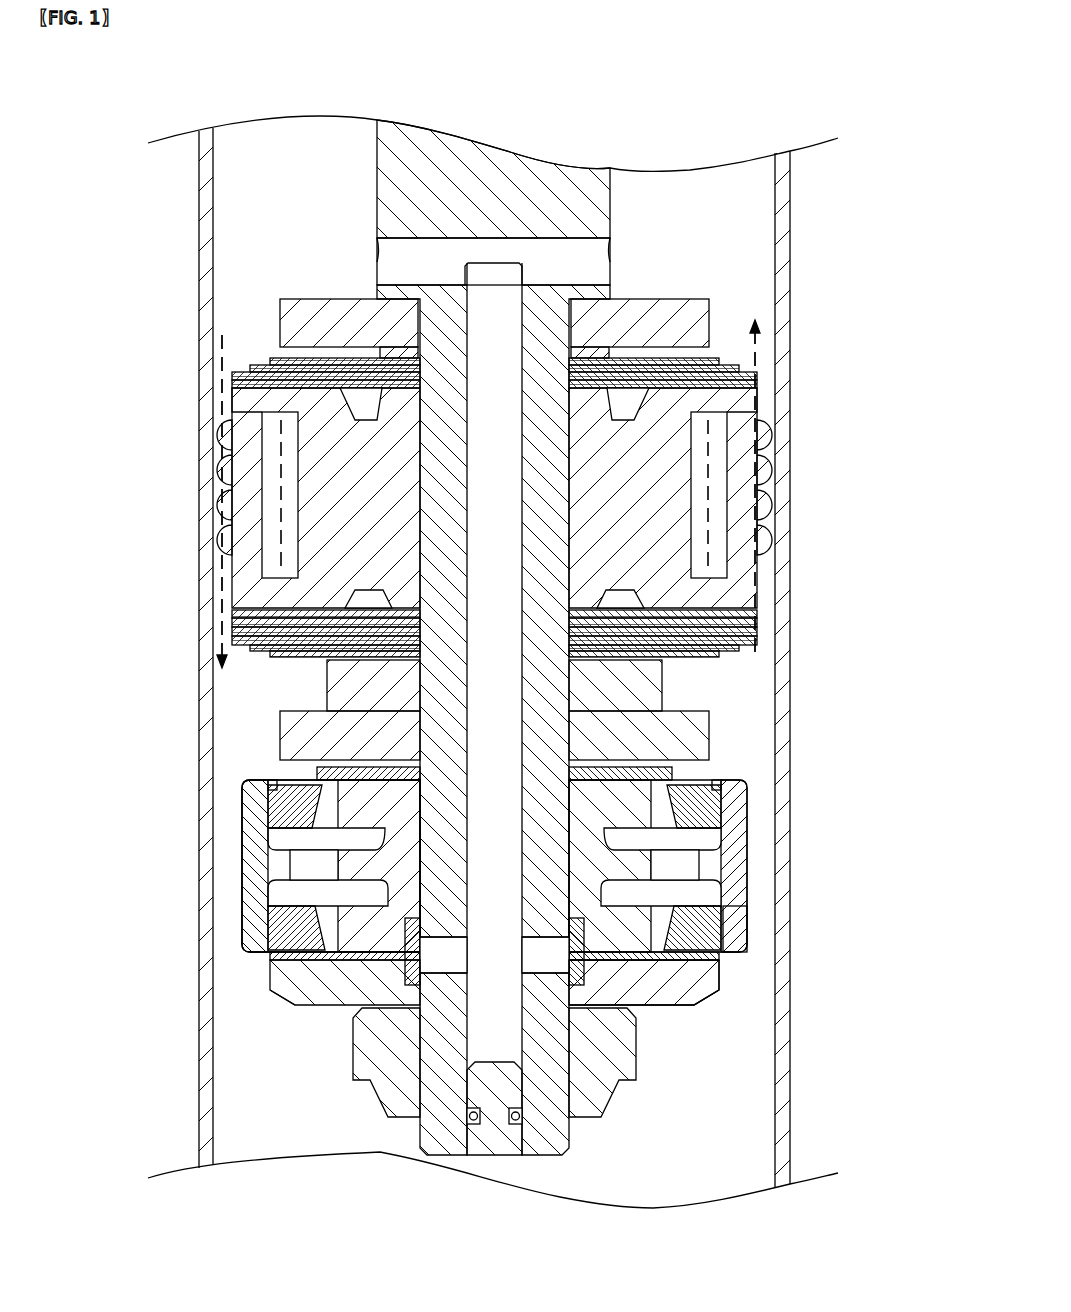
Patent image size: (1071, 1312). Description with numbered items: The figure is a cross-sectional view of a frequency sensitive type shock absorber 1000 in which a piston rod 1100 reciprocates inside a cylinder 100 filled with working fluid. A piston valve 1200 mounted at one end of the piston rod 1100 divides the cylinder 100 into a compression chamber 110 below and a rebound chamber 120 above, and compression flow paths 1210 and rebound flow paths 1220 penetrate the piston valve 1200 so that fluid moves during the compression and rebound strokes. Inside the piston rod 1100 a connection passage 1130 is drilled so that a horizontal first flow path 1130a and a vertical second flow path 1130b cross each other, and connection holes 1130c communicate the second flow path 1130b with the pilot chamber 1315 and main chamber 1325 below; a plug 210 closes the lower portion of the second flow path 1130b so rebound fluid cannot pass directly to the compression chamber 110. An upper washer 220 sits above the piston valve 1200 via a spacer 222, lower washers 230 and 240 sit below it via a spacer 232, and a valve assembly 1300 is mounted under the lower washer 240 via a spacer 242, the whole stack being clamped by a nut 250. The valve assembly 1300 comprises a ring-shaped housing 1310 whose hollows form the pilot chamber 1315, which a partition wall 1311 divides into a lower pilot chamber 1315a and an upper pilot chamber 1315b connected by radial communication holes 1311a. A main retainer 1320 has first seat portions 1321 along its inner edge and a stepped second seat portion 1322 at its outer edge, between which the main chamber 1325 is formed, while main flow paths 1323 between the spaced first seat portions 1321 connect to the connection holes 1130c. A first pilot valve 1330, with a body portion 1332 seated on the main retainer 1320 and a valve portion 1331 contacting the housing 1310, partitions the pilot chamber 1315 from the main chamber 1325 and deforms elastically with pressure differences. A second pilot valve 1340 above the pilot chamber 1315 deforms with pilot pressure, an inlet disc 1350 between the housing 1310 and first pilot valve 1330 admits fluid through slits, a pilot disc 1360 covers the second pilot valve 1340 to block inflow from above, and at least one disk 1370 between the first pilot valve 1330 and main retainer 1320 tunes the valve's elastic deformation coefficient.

The frequency sensitive type shock absorber 1000 is at (110, 141).
The cylinder 100 is at (780, 225).
The compression chamber 110 is at (248, 1100).
The rebound chamber 120 is at (248, 250).
The piston rod 1100 is at (372, 152).
The connection passage 1130 is at (694, 205).
The first flow path 1130a is at (585, 243).
The second flow path 1130b is at (555, 290).
The connection holes 1130c is at (560, 965).
The piston valve 1200 is at (228, 466).
The compression flow paths 1210 is at (722, 477).
The rebound flow paths 1220 is at (266, 510).
The upper washer 220 is at (280, 319).
The spacer 222 is at (388, 352).
The lower washer 230 is at (650, 690).
The spacer 232 is at (612, 656).
The lower washer 240 is at (700, 735).
The spacer 242 is at (320, 738).
The nut 250 is at (355, 1045).
The plug 210 is at (492, 1157).
The valve assembly 1300 is at (232, 894).
The housing 1310 is at (255, 805).
The partition wall 1311 is at (300, 848).
The communication holes 1311a is at (310, 881).
The pilot chamber 1315 is at (869, 835).
The lower pilot chamber 1315a is at (663, 900).
The upper pilot chamber 1315b is at (660, 838).
The main retainer 1320 is at (262, 994).
The first seat portions 1321 is at (600, 1005).
The second seat portion 1322 is at (700, 985).
The main flow paths 1323 is at (560, 992).
The main chamber 1325 is at (290, 995).
The first pilot valve 1330 is at (867, 918).
The valve portion 1331 is at (712, 928).
The body portion 1332 is at (700, 956).
The second pilot valve 1340 is at (700, 800).
The inlet disc 1350 is at (598, 940).
The pilot disc 1360 is at (670, 773).
The disk 1370 is at (290, 972).